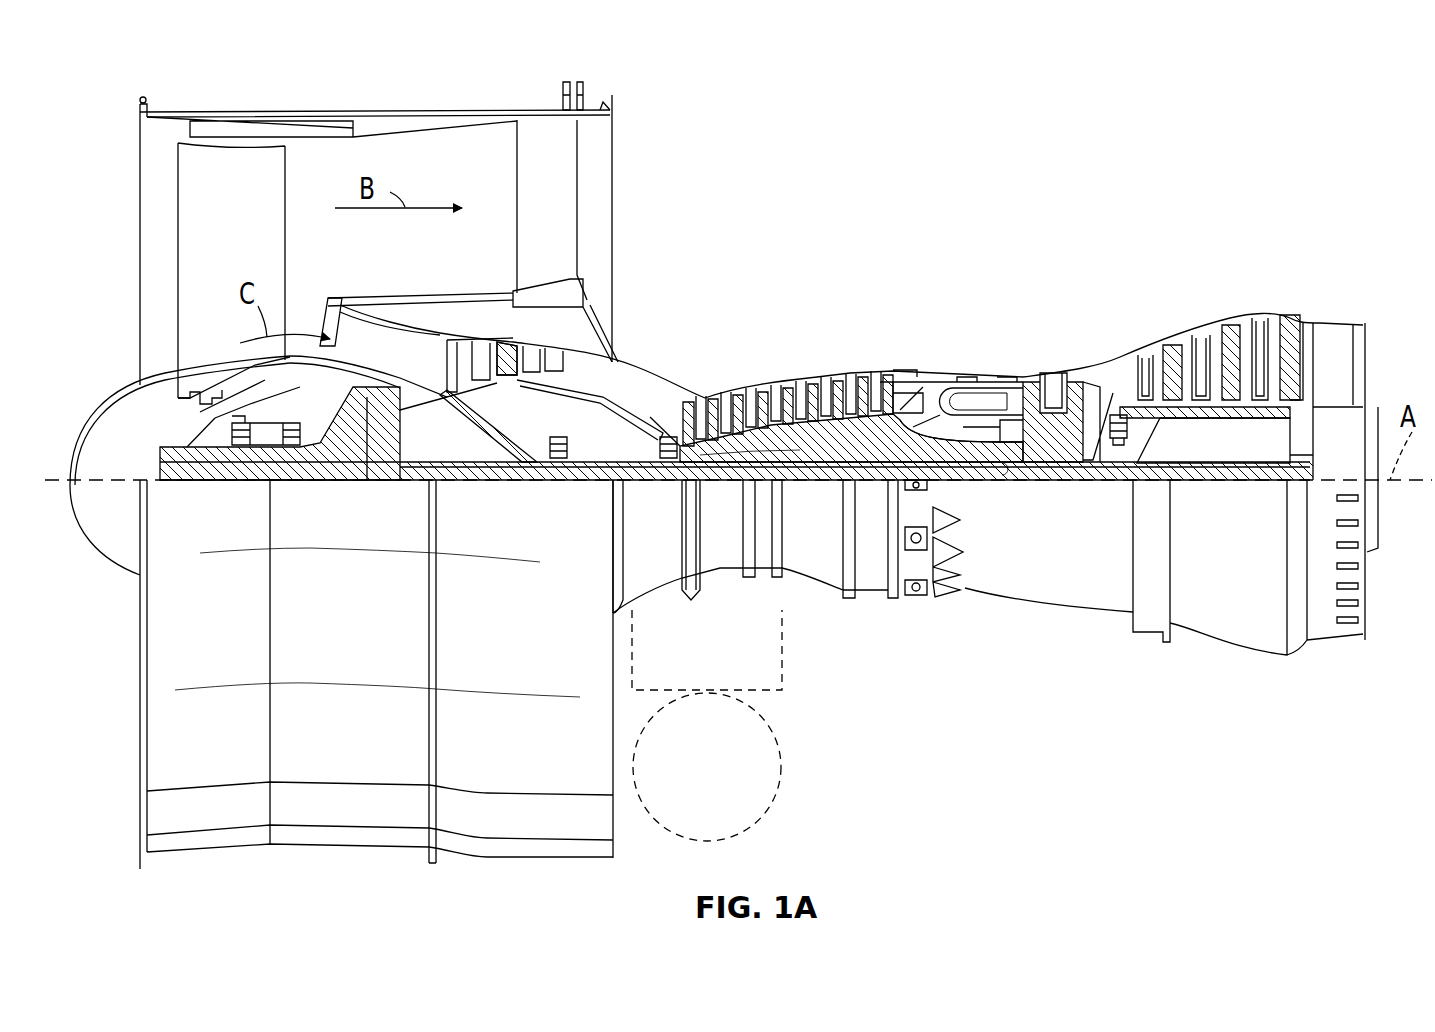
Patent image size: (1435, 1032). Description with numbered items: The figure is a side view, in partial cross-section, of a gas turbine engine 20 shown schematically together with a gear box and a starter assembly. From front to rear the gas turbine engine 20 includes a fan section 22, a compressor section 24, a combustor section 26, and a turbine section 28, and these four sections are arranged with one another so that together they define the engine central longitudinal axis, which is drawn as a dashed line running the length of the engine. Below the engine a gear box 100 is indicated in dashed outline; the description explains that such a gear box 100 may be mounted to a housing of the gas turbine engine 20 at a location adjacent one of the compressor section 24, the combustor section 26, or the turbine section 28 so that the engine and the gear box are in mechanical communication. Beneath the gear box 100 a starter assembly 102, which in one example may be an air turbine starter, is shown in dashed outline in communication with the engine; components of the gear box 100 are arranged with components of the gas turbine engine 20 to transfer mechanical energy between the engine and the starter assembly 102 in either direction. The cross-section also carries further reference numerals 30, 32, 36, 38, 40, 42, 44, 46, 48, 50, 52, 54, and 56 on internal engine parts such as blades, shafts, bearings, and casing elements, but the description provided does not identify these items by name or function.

The gas turbine engine 20 is at (1187, 147).
The fan section 22 is at (407, 88).
The compressor section 24 is at (803, 335).
The combustor section 26 is at (968, 335).
The turbine section 28 is at (1160, 315).
The low speed spool / inner shaft 30 is at (835, 484).
The fuel injector / combustor 32 is at (905, 393).
The low pressure shaft 36 is at (874, 602).
The bearing systems 38 is at (243, 452).
The inner shaft 40 is at (637, 546).
The fan blade 42 is at (257, 240).
The low pressure compressor / vanes 44 is at (525, 352).
The low pressure turbine 46 is at (1220, 338).
The geared architecture / hub 48 is at (366, 450).
The high speed spool 50 is at (1002, 470).
The high pressure compressor 52 is at (797, 445).
The high pressure turbine 54 is at (1056, 376).
The combustor 56 is at (975, 402).
The gear box 100 is at (783, 674).
The starter assembly 102 is at (783, 752).